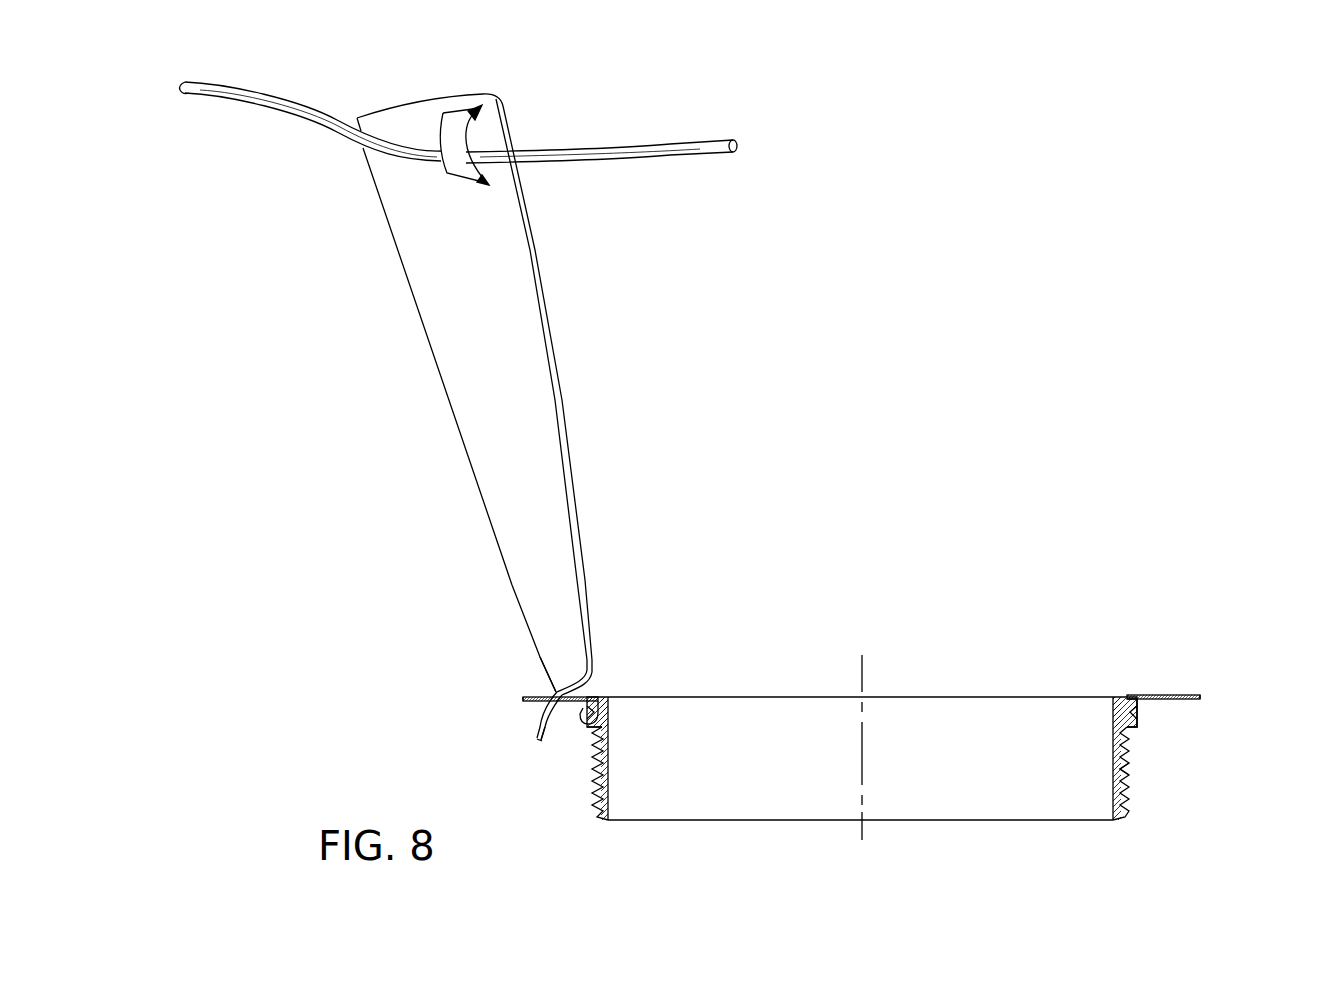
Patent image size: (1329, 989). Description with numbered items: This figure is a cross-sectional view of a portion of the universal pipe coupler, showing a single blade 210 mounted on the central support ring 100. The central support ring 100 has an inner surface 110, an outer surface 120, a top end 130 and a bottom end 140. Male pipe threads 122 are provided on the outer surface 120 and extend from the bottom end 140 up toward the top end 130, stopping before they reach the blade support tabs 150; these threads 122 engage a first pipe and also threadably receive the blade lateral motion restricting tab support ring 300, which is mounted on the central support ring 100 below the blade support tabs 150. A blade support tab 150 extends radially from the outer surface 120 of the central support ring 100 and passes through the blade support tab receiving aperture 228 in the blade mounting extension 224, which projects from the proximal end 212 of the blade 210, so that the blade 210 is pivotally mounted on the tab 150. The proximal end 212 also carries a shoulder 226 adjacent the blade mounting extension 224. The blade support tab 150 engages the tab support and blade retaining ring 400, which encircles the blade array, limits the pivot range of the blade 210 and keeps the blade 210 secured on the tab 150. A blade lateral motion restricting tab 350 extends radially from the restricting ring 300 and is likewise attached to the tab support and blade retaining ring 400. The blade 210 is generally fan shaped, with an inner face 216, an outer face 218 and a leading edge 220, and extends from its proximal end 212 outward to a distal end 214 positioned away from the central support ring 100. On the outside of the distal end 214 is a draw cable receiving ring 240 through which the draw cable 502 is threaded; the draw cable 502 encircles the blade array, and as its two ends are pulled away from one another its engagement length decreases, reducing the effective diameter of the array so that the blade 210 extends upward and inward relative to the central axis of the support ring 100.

The central support ring 100 is at (908, 741).
The inner surface 110 is at (610, 752).
The outer surface 120 is at (1133, 805).
The male pipe threads 122 is at (1132, 773).
The top end 130 is at (968, 697).
The bottom end 140 is at (1027, 820).
The blade support tab 150 is at (522, 698).
The blade 210 is at (500, 456).
The proximal end 212 is at (543, 669).
The distal end 214 is at (403, 115).
The inner face 216 is at (572, 375).
The outer face 218 is at (448, 348).
The leading edge 220 is at (578, 510).
The blade mounting extension 224 is at (546, 746).
The shoulder 226 is at (590, 682).
The blade support tab receiving aperture 228 is at (556, 727).
The draw cable receiving ring 240 is at (470, 123).
The blade lateral motion restricting tab support ring 300 is at (578, 720).
The blade lateral motion restricting tab 350 is at (600, 716).
The tab support and blade retaining ring 400 is at (525, 703).
The draw cable 502 is at (683, 163).